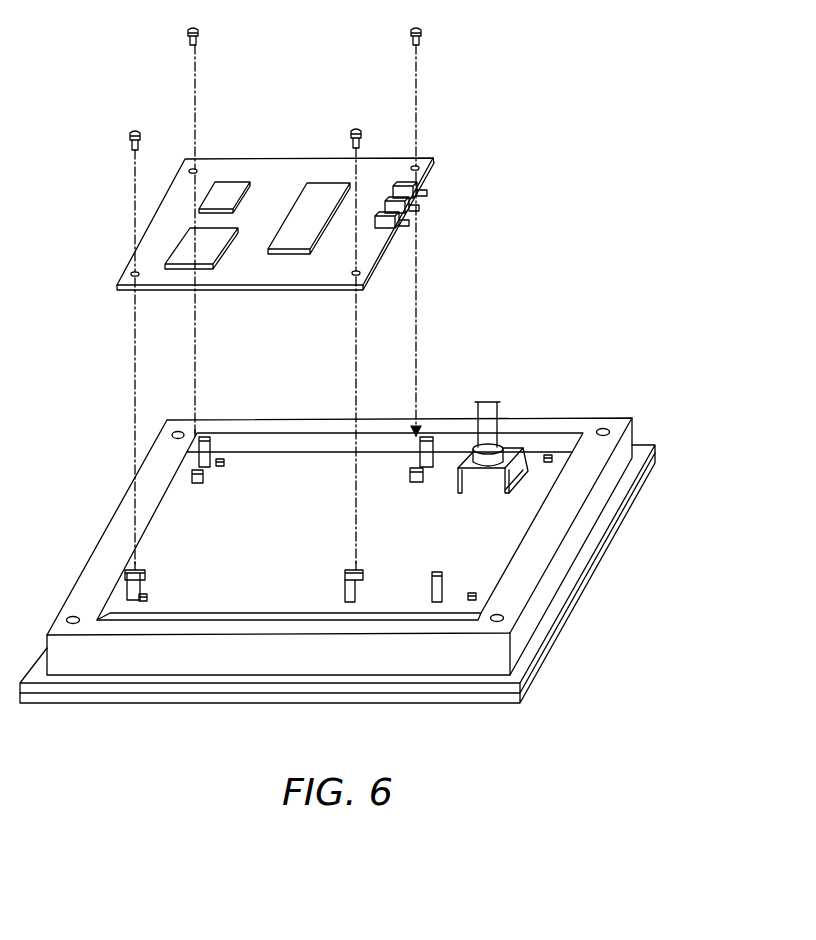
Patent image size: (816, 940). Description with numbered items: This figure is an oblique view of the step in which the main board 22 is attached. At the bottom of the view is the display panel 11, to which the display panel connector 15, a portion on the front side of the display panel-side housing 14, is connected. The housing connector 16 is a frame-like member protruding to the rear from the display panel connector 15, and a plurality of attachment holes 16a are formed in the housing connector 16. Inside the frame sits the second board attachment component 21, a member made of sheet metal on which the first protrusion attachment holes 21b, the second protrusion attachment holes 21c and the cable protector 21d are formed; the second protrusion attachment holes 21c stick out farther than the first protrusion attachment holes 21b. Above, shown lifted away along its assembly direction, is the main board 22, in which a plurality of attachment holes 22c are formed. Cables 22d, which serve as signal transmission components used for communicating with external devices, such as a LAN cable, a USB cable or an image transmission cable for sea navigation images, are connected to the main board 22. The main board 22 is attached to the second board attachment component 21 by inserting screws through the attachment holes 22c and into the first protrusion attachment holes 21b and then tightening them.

The display panel 11 is at (560, 641).
The display panel-side housing 14 is at (665, 427).
The display panel connector 15 is at (648, 440).
The housing connector 16 is at (557, 426).
The attachment holes 16a is at (600, 426).
The second board attachment component 21 is at (328, 461).
The first protrusion attachment holes 21b is at (205, 478).
The second protrusion attachment holes 21c is at (125, 590).
The cable protector 21d is at (508, 442).
The main board 22 is at (446, 157).
The attachment holes 22c is at (196, 165).
The cables 22d is at (404, 224).